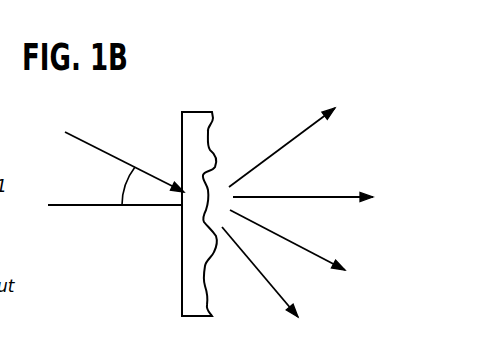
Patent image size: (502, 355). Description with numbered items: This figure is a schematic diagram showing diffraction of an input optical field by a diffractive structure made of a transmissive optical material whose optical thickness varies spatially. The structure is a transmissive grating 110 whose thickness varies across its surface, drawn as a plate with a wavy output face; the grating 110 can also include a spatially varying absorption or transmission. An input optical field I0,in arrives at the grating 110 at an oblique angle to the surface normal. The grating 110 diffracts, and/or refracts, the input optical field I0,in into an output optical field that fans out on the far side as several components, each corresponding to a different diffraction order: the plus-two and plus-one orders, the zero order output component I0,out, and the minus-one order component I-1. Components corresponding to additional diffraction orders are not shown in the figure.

The transmissive grating 110 is at (200, 107).
The input optical field I0,in is at (124, 153).
The zero order output component I0,out is at (323, 252).
The −1 order output component I-1 is at (279, 286).